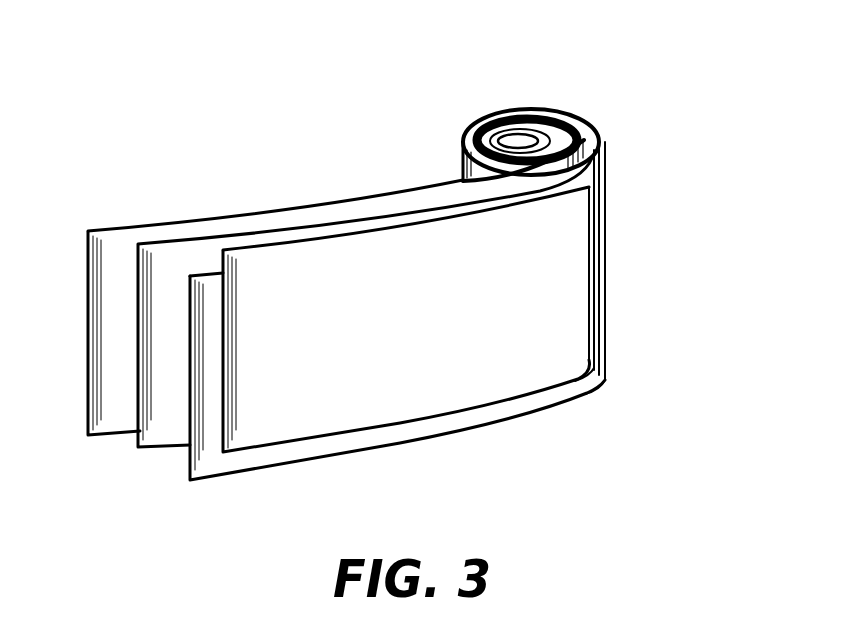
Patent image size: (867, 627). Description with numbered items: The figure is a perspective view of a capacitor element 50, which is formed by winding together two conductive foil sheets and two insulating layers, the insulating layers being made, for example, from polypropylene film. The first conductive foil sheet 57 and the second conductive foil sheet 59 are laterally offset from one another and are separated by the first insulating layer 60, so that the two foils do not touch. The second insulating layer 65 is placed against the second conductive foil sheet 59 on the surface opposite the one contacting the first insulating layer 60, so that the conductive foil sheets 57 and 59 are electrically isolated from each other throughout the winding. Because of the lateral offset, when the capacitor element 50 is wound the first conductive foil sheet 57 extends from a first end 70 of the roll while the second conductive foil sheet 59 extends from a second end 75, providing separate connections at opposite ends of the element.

The capacitor element 50 is at (387, 299).
The conductive foil sheet 57 is at (118, 228).
The conductive foil sheet 59 is at (190, 482).
The first insulating layer 60 is at (140, 448).
The second insulating layer 65 is at (280, 427).
The first end 70 is at (587, 124).
The second end 75 is at (608, 382).